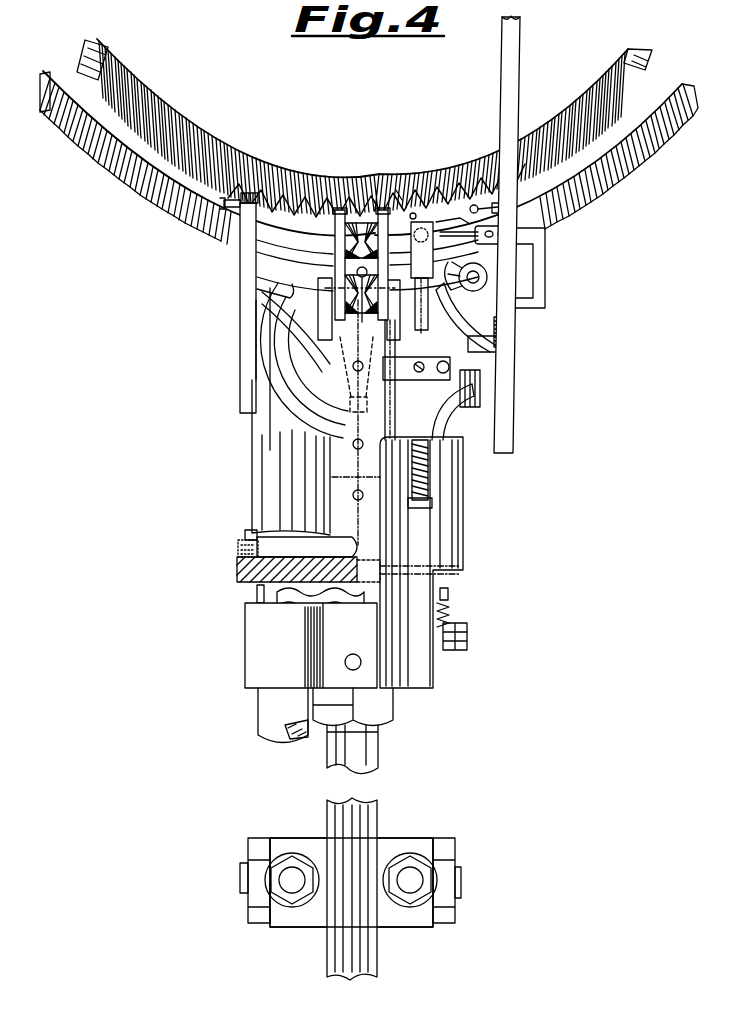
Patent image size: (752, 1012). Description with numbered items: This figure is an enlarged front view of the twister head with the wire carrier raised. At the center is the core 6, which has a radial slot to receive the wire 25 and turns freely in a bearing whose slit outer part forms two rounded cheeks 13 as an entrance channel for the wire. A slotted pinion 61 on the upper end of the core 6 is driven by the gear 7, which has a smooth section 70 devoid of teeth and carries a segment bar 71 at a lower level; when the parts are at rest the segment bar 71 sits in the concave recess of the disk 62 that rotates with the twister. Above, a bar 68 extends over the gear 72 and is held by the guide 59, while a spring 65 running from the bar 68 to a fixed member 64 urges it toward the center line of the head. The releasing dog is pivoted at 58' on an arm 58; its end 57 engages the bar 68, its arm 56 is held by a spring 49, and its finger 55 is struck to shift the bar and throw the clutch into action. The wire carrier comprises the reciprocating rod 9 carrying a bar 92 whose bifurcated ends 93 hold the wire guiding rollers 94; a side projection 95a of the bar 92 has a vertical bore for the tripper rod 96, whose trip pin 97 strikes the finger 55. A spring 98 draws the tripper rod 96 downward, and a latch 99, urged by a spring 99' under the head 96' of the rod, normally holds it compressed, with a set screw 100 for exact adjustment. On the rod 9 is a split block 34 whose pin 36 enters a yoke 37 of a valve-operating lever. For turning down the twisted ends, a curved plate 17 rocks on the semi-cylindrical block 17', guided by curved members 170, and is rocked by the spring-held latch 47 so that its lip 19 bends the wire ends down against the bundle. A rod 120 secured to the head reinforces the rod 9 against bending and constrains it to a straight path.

The central core 6 is at (262, 646).
The gear 7 is at (174, 228).
The rod or shaft 9 is at (328, 760).
The cheeks 13 is at (300, 489).
The curved plate 17 is at (228, 544).
The semi-cylindrical block 17' is at (328, 567).
The lip 19 is at (343, 540).
The wire 25 is at (357, 486).
The split block 34 is at (342, 914).
The pin 36 is at (240, 879).
The yoke 37 is at (248, 912).
The spring-held latch 47 is at (256, 594).
The spring 49 is at (500, 227).
The arm or finger 55 is at (422, 278).
The arm 56 is at (514, 244).
The arm or end 57 is at (514, 322).
The arm 58 is at (496, 317).
The pivot 58' is at (524, 271).
The guide 59 is at (545, 280).
The slotted pinion 61 is at (300, 301).
The disk 62 is at (285, 316).
The fixed member 64 is at (257, 193).
The spring 65 is at (478, 204).
The bar 68 is at (506, 111).
The smooth section 70 is at (268, 252).
The segment bar 71 is at (241, 279).
The gear 72 is at (181, 121).
The bar 92 is at (244, 446).
The bifurcated ends 93 is at (340, 283).
The wire guiding rollers 94 is at (345, 237).
The side projection 95a is at (374, 374).
The tripper rod 96 is at (415, 368).
The head 96' is at (415, 172).
The trip pin 97 is at (396, 190).
The spring 98 is at (432, 466).
The latch 99 is at (508, 352).
The spring 99' is at (464, 380).
The set screw 100 is at (482, 374).
The rod 120 is at (270, 720).
The curved members 170 is at (246, 531).